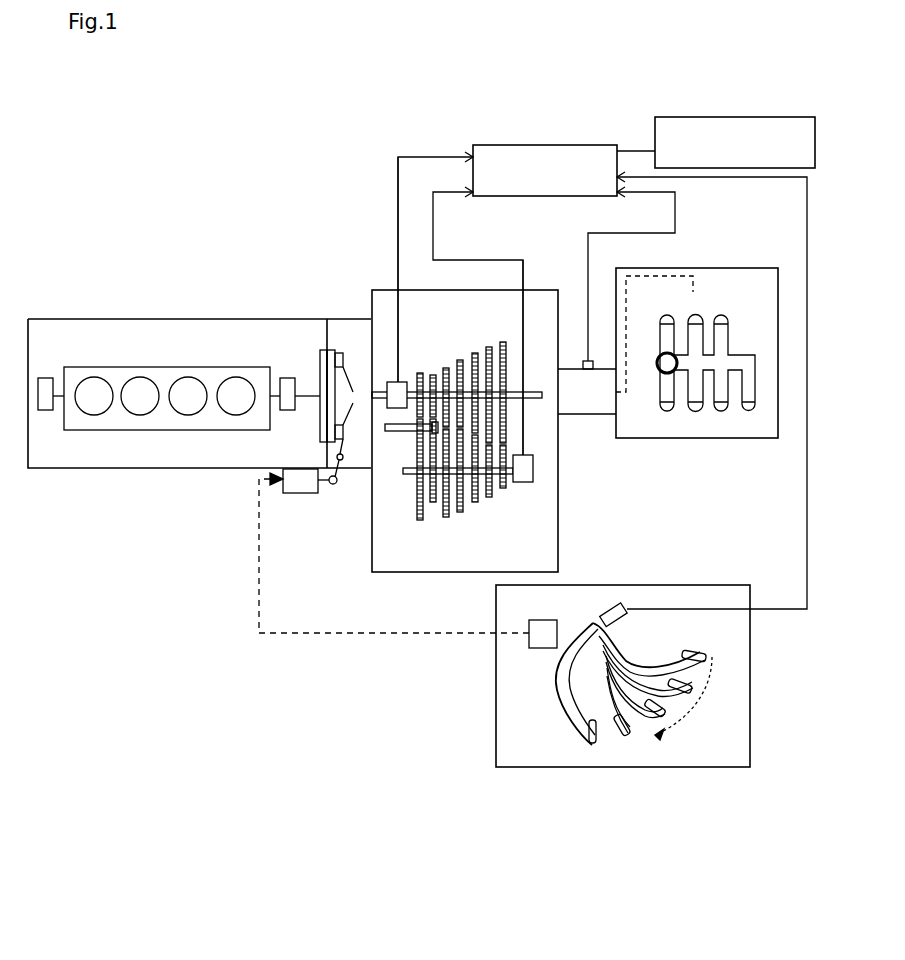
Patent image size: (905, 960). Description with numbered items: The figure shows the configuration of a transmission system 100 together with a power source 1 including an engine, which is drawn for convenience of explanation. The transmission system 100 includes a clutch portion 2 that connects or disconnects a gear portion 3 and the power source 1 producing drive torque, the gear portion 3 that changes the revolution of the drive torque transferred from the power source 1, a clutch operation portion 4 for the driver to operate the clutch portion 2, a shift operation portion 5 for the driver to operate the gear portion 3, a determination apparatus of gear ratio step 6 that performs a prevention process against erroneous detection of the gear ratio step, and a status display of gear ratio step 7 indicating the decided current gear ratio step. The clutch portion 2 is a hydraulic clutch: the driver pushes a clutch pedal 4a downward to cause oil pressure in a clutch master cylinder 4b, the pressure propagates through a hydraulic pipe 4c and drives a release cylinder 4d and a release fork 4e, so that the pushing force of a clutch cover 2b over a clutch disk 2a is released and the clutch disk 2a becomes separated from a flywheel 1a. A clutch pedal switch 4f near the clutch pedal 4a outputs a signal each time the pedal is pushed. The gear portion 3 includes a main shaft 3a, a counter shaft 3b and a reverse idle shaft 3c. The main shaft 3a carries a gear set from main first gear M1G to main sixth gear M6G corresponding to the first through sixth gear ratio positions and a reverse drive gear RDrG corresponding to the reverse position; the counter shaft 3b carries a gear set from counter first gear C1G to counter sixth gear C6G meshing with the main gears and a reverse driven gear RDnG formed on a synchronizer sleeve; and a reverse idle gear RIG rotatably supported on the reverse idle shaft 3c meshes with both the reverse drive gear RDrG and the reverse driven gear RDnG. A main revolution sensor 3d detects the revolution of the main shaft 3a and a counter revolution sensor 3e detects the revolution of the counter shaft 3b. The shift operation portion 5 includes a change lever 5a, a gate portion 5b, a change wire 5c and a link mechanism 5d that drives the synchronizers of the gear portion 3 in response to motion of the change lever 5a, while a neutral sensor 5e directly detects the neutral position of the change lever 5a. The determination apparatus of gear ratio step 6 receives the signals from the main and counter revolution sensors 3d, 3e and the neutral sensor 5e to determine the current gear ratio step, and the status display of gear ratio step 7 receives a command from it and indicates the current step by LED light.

The transmission system 100 is at (433, 66).
The power source 1 is at (187, 318).
The flywheel 1a is at (323, 350).
The clutch portion 2 is at (333, 354).
The clutch disk 2a is at (331, 350).
The clutch cover 2b is at (348, 306).
The gear portion 3 is at (496, 364).
The main shaft 3a is at (530, 392).
The counter shaft 3b is at (413, 476).
The reverse idle shaft 3c is at (400, 430).
The main revolution sensor 3d is at (393, 382).
The counter revolution sensor 3e is at (527, 475).
The clutch operation portion 4 is at (623, 709).
The clutch pedal 4a is at (558, 703).
The clutch master cylinder 4b is at (543, 620).
The hydraulic pipe 4c is at (505, 636).
The release cylinder 4d is at (302, 498).
The release fork 4e is at (341, 475).
The clutch pedal switch 4f is at (628, 618).
The shift operation portion 5 is at (668, 344).
The change lever 5a is at (666, 373).
The gate portion 5b is at (729, 347).
The change wire 5c is at (660, 279).
The link mechanism 5d is at (588, 416).
The neutral sensor 5e is at (587, 361).
The determination apparatus of gear ratio step 6 is at (551, 143).
The status display of gear ratio step 7 is at (733, 116).
The main 1st gear M1G is at (490, 313).
The main 6th gear M6G is at (503, 341).
The counter 1st gear C1G is at (505, 556).
The counter 6th gear C6G is at (503, 489).
The reverse drive gear RDrG is at (433, 373).
The reverse driven gear RDnG is at (433, 504).
The reverse idle gear RIG is at (430, 434).